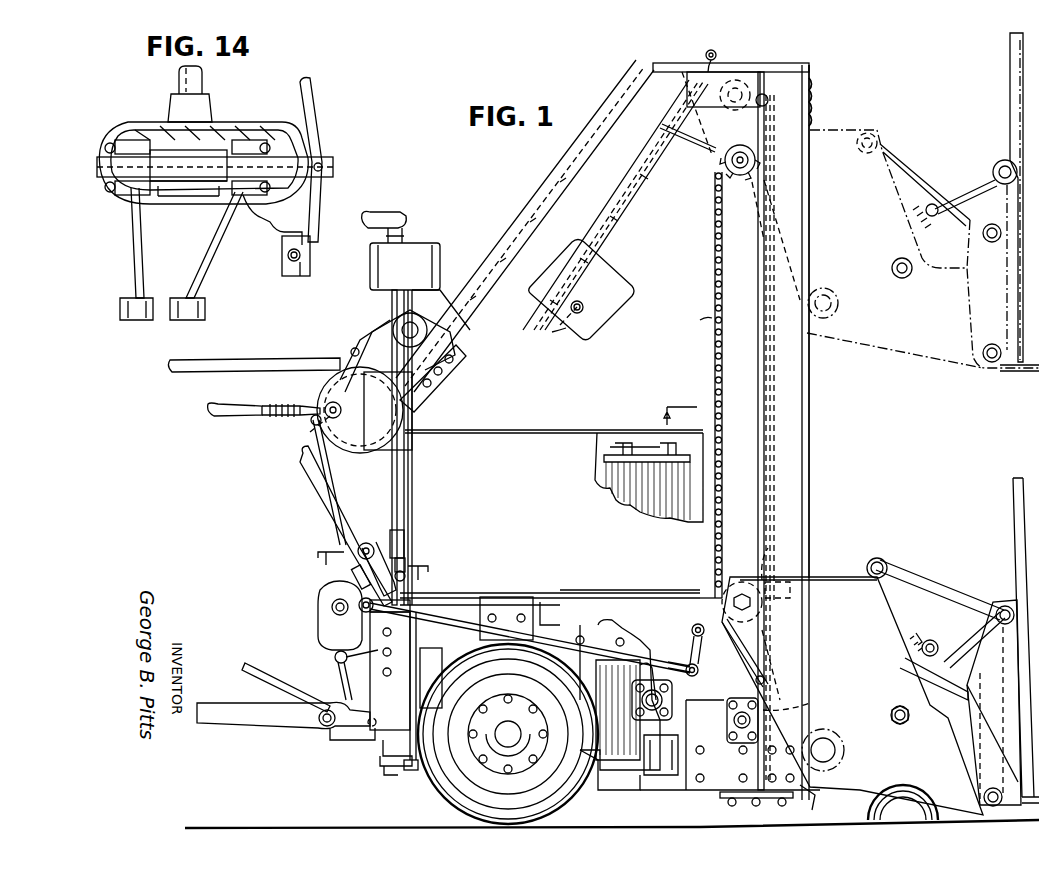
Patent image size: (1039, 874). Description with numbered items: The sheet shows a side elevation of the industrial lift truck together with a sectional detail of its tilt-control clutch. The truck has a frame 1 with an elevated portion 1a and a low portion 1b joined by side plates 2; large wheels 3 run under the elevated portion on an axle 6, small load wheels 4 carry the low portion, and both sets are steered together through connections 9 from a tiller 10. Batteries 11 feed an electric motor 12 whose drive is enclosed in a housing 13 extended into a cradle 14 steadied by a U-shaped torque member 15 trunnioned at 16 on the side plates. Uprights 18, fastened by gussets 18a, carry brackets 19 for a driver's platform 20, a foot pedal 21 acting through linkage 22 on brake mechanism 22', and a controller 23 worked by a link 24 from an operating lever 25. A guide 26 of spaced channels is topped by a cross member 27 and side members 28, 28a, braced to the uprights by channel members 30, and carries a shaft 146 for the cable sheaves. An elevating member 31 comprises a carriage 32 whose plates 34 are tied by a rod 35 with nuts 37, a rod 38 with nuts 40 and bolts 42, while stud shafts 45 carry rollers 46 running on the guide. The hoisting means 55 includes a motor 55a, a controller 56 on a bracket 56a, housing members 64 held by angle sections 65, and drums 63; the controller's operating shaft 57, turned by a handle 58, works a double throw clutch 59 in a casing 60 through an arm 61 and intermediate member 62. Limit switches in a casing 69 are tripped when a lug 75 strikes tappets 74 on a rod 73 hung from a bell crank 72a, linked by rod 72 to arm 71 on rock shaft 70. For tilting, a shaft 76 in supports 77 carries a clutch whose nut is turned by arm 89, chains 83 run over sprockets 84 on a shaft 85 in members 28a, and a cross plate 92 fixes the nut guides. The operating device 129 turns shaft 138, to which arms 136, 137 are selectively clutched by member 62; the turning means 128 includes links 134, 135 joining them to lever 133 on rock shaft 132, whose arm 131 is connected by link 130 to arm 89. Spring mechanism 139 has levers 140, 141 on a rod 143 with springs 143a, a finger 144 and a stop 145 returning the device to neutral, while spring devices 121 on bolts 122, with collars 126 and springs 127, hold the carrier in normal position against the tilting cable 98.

In FIG. 14, the operating shaft 57 is at (203, 74).
In FIG. 1, the operating shaft 57 is at (402, 504).
In FIG. 14, the casing 60 is at (140, 122).
In FIG. 1, the casing 60 is at (408, 542).
In FIG. 14, the intermediate clutch member 62 is at (236, 130).
In FIG. 14, the shaft 138 is at (90, 162).
In FIG. 14, the operating device 129 is at (314, 114).
In FIG. 1, the operating device 129 is at (320, 476).
In FIG. 14, the double throw clutch 59 is at (188, 190).
In FIG. 14, the arm 61 is at (188, 205).
In FIG. 14, the stop 145 is at (272, 232).
In FIG. 14, the arm 136 is at (133, 258).
In FIG. 14, the arm 137 is at (200, 258).
In FIG. 14, the finger 144 is at (282, 248).
In FIG. 14, the rod 143 is at (303, 255).
In FIG. 14, the lever 141 is at (296, 280).
In FIG. 1, the lever 141 is at (352, 588).
In FIG. 1, the handle 58 is at (380, 206).
In FIG. 1, the controller 56 is at (442, 252).
In FIG. 1, the bracket 56a is at (480, 278).
In FIG. 1, the upright angles 18 is at (414, 476).
In FIG. 1, the angle sections 65 is at (414, 416).
In FIG. 1, the motor 55a is at (382, 310).
In FIG. 1, the housing members 64 is at (350, 346).
In FIG. 1, the hoisting means 55 is at (349, 410).
In FIG. 1, the drums 63 is at (305, 423).
In FIG. 1, the tiller 10 is at (248, 368).
In FIG. 1, the operating lever 25 is at (240, 416).
In FIG. 1, the link 24 is at (330, 472).
In FIG. 1, the housing 13 is at (371, 569).
In FIG. 1, the spring mechanism 139 is at (390, 544).
In FIG. 1, the expansion spring 143a is at (405, 573).
In FIG. 1, the lever 140 is at (387, 599).
In FIG. 1, the controller 23 is at (318, 600).
In FIG. 1, the main frame portion 1a is at (500, 592).
In FIG. 1, the gussets 18a is at (448, 592).
In FIG. 1, the link 134 is at (630, 594).
In FIG. 1, the brake mechanism 22' is at (419, 686).
In FIG. 1, the linkage 22 is at (340, 675).
In FIG. 1, the foot pedal 21 is at (274, 672).
In FIG. 1, the platform 20 is at (260, 728).
In FIG. 1, the brackets 19 is at (366, 740).
In FIG. 1, the steering connections 9 is at (392, 775).
In FIG. 1, the large wheels 3 is at (432, 812).
In FIG. 1, the electric motor 12 is at (600, 642).
In FIG. 1, the link 135 is at (611, 710).
In FIG. 1, the cradle 14 is at (640, 681).
In FIG. 1, the trunnions 16 is at (672, 696).
In FIG. 1, the torque member 15 is at (662, 740).
In FIG. 1, the lever 133 is at (686, 677).
In FIG. 1, the turning means 128 is at (670, 655).
In FIG. 1, the rock shaft 132 is at (690, 628).
In FIG. 1, the arm 131 is at (709, 650).
In FIG. 1, the frame 1 is at (705, 726).
In FIG. 1, the shaft 76 is at (726, 724).
In FIG. 1, the supports 77 is at (734, 742).
In FIG. 1, the side plates 2 is at (712, 800).
In FIG. 1, the cross plate 92 is at (756, 806).
In FIG. 1, the low frame portion 1b is at (813, 803).
In FIG. 1, the power supply 11 is at (612, 492).
In FIG. 1, the axle 6 is at (680, 418).
In FIG. 1, the guide 26 is at (809, 492).
In FIG. 1, the rod 73 is at (770, 462).
In FIG. 1, the upper side members 28 is at (760, 62).
In FIG. 1, the cross member 27 is at (812, 70).
In FIG. 1, the shaft 146 is at (818, 98).
In FIG. 1, the bell crank 72a is at (716, 52).
In FIG. 1, the lower side members 28a is at (702, 160).
In FIG. 1, the shaft 85 is at (732, 162).
In FIG. 1, the sprockets 84 is at (751, 240).
In FIG. 1, the chains 83 is at (704, 385).
In FIG. 1, the channel members 30 is at (588, 188).
In FIG. 1, the rod 72 is at (592, 236).
In FIG. 1, the casing 69 is at (632, 300).
In FIG. 1, the arm 71 is at (580, 290).
In FIG. 1, the rock shaft 70 is at (557, 335).
In FIG. 1, the elevating member 31 is at (852, 696).
In FIG. 1, the carriage 32 is at (842, 585).
In FIG. 1, the bolt 42 is at (745, 580).
In FIG. 1, the tappets 74 is at (790, 590).
In FIG. 1, the lug 75 is at (798, 556).
In FIG. 1, the link 130 is at (754, 648).
In FIG. 1, the arm 89 is at (799, 698).
In FIG. 1, the stud shaft 45 is at (836, 748).
In FIG. 1, the roller 46 is at (850, 732).
In FIG. 1, the rod 38 is at (902, 724).
In FIG. 1, the nuts 40 is at (908, 718).
In FIG. 1, the bolt 122 is at (896, 556).
In FIG. 1, the spring-acted devices 121 is at (930, 600).
In FIG. 1, the collar 126 is at (936, 640).
In FIG. 1, the cable 98 is at (972, 636).
In FIG. 1, the spring 127 is at (936, 672).
In FIG. 1, the inner plates 34 is at (962, 800).
In FIG. 1, the nuts 37 is at (990, 806).
In FIG. 1, the rod 35 is at (1010, 806).
In FIG. 1, the load wheels 4 is at (882, 812).